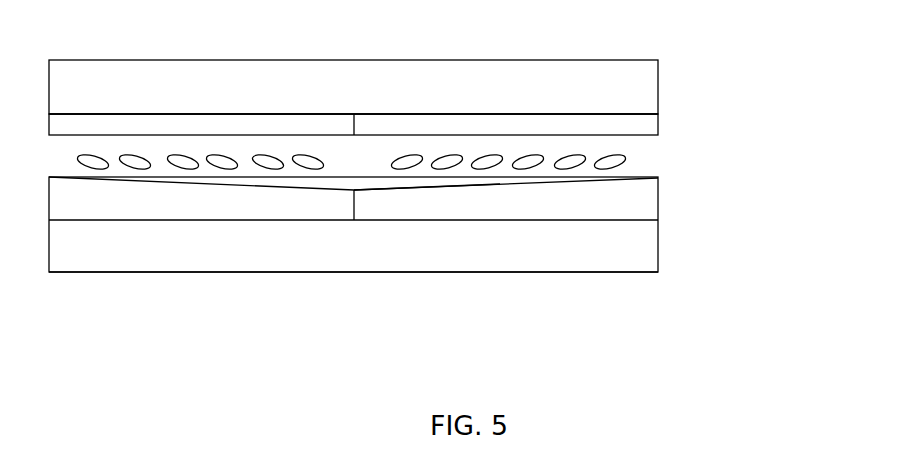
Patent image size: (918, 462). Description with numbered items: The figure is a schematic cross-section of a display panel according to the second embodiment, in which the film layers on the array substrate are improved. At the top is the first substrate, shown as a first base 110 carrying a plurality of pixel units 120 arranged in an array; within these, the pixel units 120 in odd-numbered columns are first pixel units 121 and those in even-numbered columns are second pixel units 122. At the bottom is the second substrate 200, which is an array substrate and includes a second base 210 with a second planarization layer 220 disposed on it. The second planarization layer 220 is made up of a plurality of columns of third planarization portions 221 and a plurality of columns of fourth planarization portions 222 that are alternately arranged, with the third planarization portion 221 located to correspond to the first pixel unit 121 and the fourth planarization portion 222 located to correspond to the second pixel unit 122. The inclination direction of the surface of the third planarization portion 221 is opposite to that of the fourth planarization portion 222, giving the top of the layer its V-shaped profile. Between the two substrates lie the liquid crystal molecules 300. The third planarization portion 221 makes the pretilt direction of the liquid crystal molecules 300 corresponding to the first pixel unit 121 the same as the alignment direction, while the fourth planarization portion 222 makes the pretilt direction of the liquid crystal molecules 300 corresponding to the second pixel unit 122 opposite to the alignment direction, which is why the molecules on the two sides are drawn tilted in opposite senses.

The first base 110 is at (645, 80).
The pixel units 120 is at (653, 126).
The first pixel unit 121 is at (170, 124).
The second pixel unit 122 is at (478, 124).
The liquid crystal molecules 300 is at (633, 162).
The second substrate 200 is at (773, 190).
The second planarization layer 220 is at (650, 211).
The second base 210 is at (658, 258).
The third planarization portion 221 is at (282, 212).
The fourth planarization portion 222 is at (416, 202).